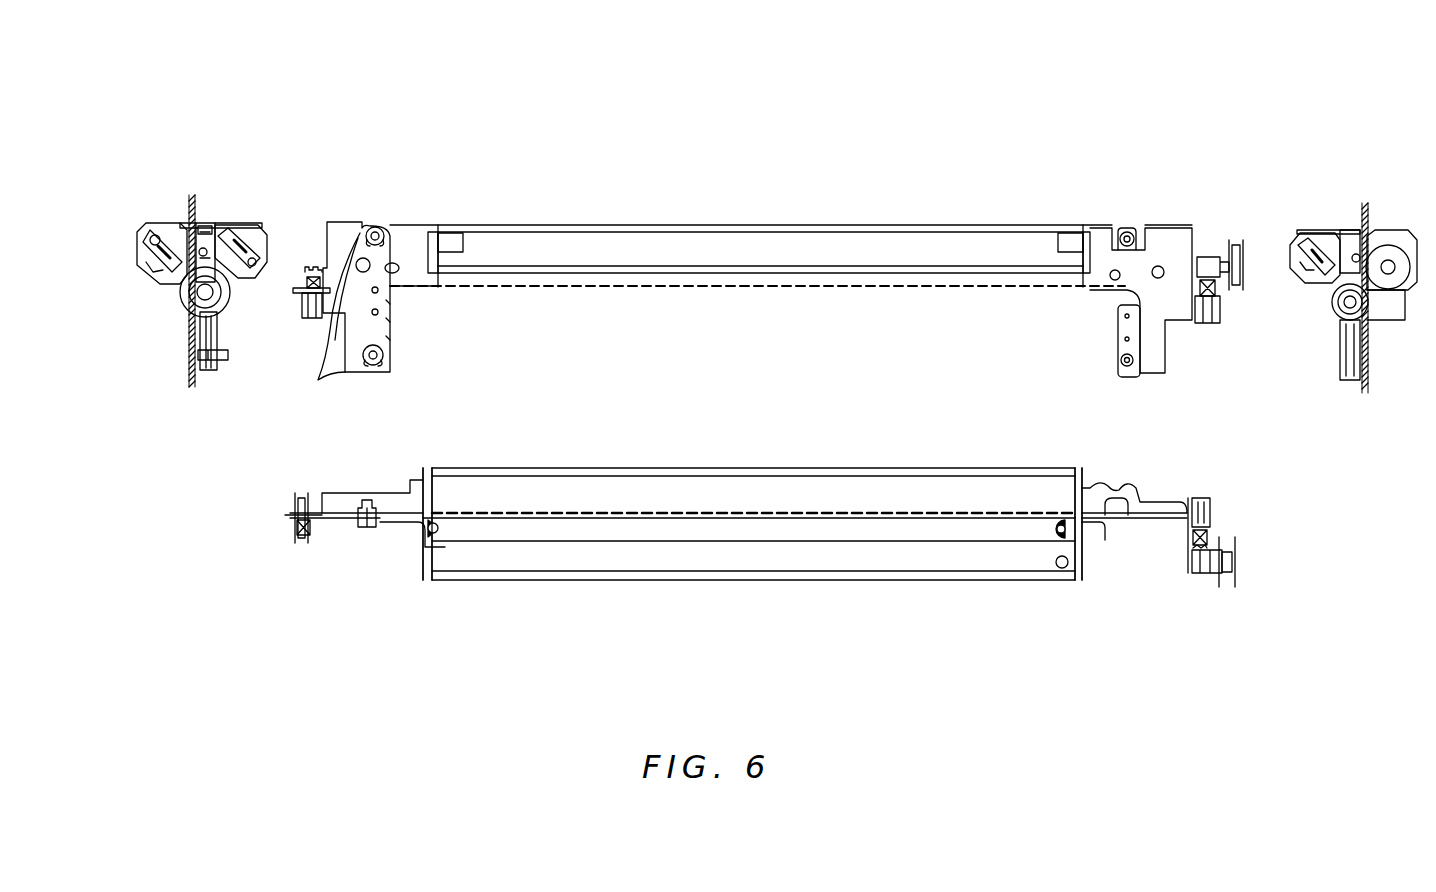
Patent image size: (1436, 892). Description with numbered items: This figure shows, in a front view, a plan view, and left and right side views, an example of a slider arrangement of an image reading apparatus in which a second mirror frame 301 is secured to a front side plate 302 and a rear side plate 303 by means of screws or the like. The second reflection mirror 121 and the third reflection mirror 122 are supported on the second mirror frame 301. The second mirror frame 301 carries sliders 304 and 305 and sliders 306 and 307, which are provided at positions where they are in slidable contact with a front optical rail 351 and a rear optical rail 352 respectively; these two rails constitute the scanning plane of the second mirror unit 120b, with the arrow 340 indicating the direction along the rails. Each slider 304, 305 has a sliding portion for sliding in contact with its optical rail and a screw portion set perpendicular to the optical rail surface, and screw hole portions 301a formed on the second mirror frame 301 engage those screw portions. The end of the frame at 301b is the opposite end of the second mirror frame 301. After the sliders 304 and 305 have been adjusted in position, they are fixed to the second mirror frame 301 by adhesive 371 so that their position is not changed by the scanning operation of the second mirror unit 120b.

The sliding direction of roller unit 340 is at (257, 125).
The front optical rail 351 is at (193, 388).
The rear optical rail 352 is at (1362, 392).
The third reflection mirror 122 is at (143, 272).
The second reflection mirror 121 is at (270, 266).
The front side plate 302 is at (262, 238).
The rear side plate 303 is at (1290, 238).
The slider 305 is at (205, 225).
The slider 304 is at (198, 360).
The adhesive 371 is at (356, 233).
The second mirror frame 301 is at (705, 223).
The slider 307 is at (1130, 232).
The slider 306 is at (1127, 362).
The screw hole portion 301a is at (428, 583).
The roller right end portion 301b is at (1076, 586).
The second mirror unit 120b is at (742, 612).